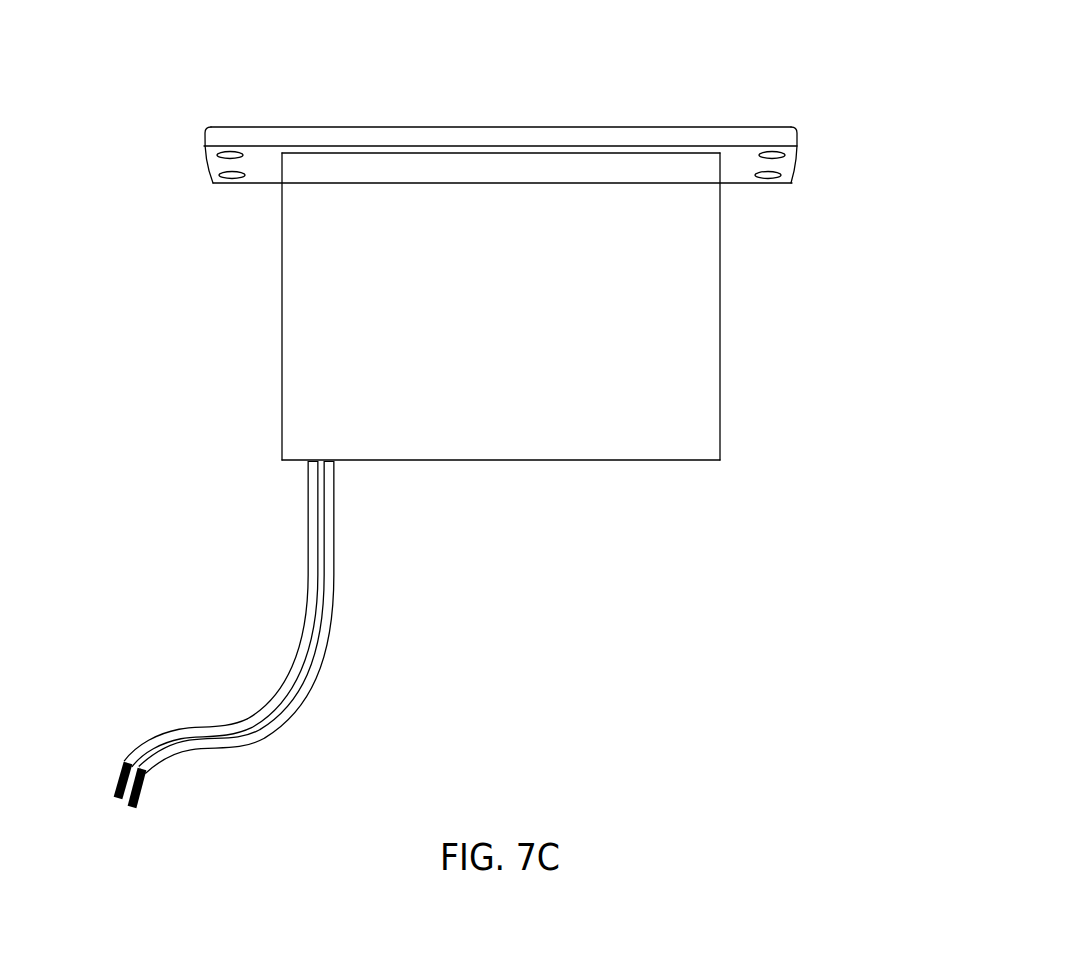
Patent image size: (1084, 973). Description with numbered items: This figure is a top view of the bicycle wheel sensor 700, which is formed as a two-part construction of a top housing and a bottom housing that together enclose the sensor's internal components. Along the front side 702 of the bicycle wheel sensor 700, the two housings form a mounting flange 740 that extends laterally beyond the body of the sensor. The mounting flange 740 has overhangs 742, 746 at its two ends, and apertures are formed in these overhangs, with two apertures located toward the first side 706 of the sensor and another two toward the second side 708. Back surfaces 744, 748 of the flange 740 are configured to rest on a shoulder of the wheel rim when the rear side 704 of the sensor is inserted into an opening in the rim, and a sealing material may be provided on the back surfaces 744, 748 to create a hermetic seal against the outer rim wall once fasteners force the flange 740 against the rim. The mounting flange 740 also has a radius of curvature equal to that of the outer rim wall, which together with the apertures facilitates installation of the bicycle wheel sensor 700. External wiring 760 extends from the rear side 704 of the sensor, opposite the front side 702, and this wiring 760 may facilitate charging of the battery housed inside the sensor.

The bicycle wheel sensor 700 is at (786, 37).
The front side 702 is at (442, 127).
The mounting flange 740 is at (597, 127).
The overhang 742 is at (785, 136).
The back surface 744 is at (787, 167).
The overhang 746 is at (217, 135).
The back surface 748 is at (213, 170).
The second side 708 is at (282, 315).
The first side 706 is at (720, 350).
The rear side 704 is at (532, 460).
The external wiring 760 is at (337, 553).